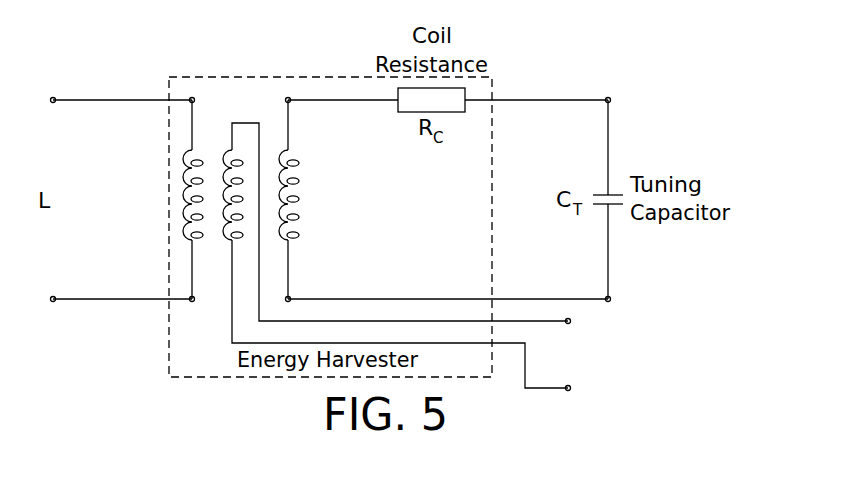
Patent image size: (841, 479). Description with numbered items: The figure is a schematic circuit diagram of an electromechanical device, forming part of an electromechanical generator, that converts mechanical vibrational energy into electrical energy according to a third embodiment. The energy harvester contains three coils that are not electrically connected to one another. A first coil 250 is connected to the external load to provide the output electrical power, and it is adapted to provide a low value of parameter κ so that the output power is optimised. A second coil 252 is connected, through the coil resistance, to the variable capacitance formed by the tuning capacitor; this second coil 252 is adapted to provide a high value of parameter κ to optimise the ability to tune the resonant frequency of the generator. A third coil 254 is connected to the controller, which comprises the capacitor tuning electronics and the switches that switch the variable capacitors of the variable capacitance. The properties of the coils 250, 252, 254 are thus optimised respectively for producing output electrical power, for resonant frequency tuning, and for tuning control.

The first coil 250 is at (183, 156).
The second coil 252 is at (302, 163).
The third coil 254 is at (217, 240).